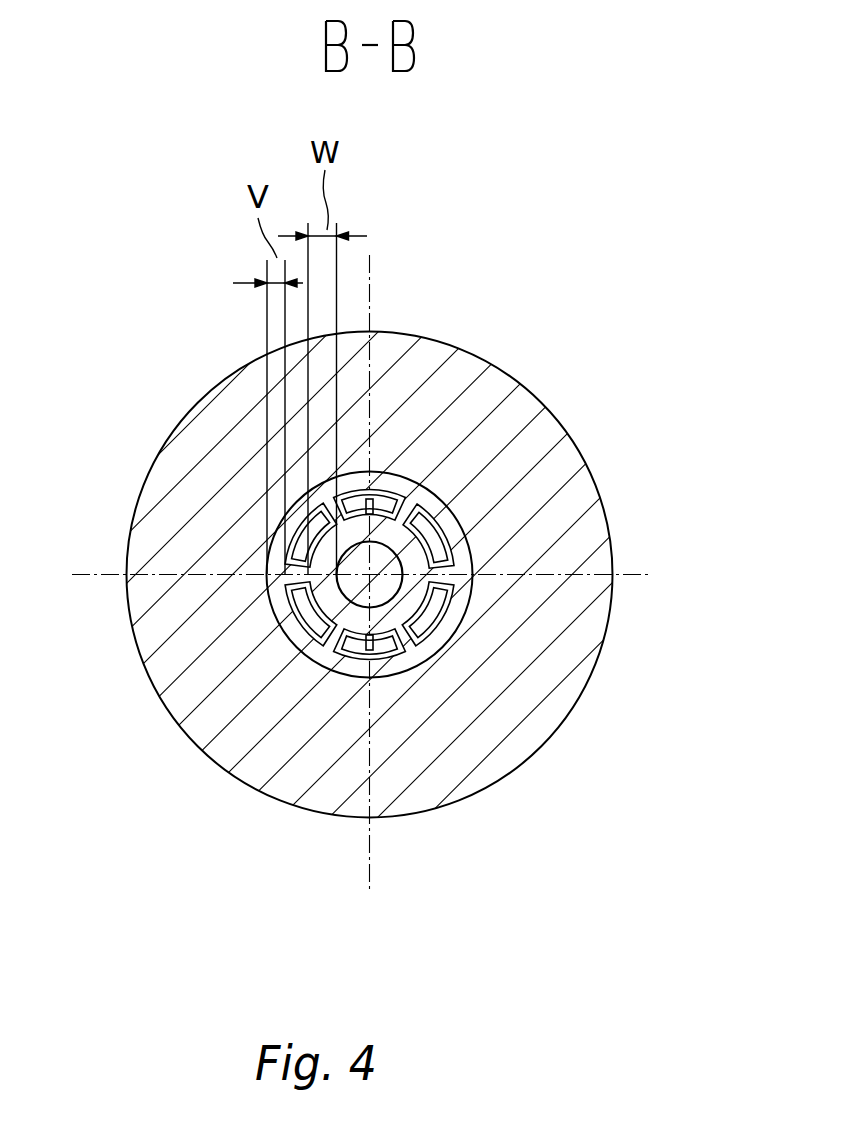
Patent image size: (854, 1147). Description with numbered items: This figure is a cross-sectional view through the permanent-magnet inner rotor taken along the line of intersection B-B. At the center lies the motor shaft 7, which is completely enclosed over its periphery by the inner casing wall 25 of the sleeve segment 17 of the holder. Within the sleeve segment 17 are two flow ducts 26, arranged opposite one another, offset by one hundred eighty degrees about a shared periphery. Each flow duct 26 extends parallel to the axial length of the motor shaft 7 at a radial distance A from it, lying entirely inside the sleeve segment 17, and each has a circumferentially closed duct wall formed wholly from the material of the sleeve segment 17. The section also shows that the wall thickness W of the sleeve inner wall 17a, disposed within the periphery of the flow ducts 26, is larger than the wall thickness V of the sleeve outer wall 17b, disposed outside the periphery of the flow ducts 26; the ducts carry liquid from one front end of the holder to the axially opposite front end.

The motor shaft 7 is at (358, 562).
The sleeve segment 17 is at (447, 510).
The sleeve inner wall 17a is at (337, 613).
The sleeve outer wall 17b is at (287, 623).
The inner casing wall 25 is at (407, 593).
The flow duct 26 is at (372, 500).